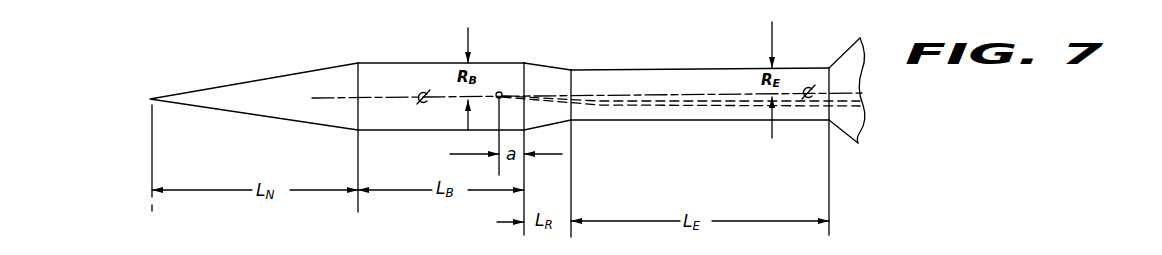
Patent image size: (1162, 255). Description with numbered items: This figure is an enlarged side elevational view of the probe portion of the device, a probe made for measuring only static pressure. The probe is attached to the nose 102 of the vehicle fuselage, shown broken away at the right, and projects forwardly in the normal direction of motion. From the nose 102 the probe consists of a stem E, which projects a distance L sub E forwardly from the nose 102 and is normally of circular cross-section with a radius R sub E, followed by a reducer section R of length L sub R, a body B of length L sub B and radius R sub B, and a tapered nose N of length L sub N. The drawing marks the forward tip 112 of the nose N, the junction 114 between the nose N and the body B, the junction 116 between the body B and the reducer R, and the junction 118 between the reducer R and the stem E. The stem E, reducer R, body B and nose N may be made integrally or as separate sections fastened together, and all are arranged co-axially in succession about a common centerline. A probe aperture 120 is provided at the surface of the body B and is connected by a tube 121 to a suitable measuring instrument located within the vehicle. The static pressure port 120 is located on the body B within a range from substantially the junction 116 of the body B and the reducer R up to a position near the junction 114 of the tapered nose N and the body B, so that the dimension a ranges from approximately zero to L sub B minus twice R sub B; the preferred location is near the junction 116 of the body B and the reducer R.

The nose 102 is at (848, 68).
The nose tip 112 is at (154, 140).
The nose-body junction 114 is at (359, 157).
The body-boattail junction 116 is at (525, 146).
The boattail-extension junction 118 is at (572, 141).
The probe aperture 120 is at (500, 91).
The tube 121 is at (628, 103).
The nose N is at (277, 87).
The body B is at (410, 77).
The reducer section R is at (554, 76).
The stem E is at (703, 93).